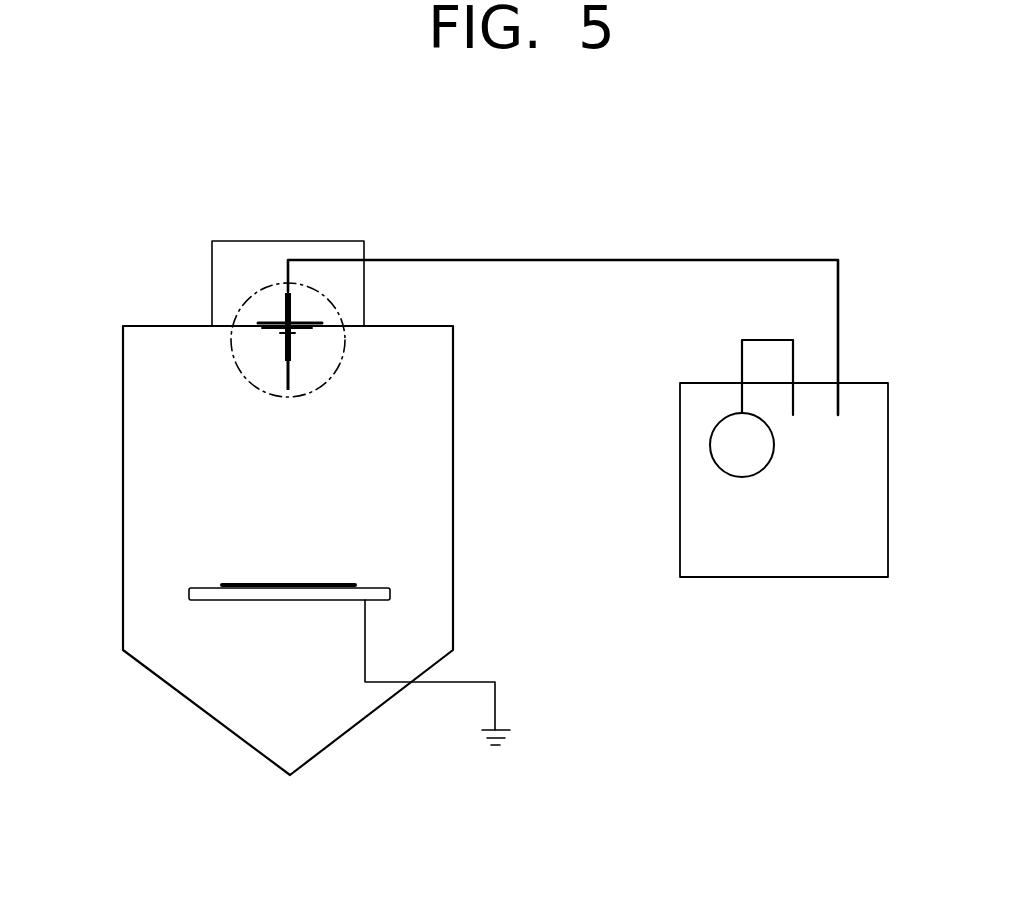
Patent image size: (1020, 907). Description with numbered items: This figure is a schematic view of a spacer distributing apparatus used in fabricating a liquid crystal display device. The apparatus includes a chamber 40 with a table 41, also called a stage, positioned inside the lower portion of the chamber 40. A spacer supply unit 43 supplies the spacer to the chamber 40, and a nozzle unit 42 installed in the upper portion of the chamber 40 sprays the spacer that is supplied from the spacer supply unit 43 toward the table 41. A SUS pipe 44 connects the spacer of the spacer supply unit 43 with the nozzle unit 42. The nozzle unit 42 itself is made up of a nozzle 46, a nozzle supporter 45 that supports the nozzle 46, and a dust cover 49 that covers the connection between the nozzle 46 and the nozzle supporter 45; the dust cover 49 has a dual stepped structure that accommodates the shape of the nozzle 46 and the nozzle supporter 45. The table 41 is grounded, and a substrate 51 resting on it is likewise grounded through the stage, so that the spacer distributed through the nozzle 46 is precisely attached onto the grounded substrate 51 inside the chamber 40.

The chamber 40 is at (455, 486).
The table 41 is at (390, 595).
The nozzle unit 42 is at (260, 288).
The spacer supply unit 43 is at (868, 370).
The SUS pipe 44 is at (532, 259).
The nozzle supporter 45 is at (257, 323).
The nozzle 46 is at (283, 375).
The dust cover 49 is at (283, 345).
The substrate 51 is at (345, 585).